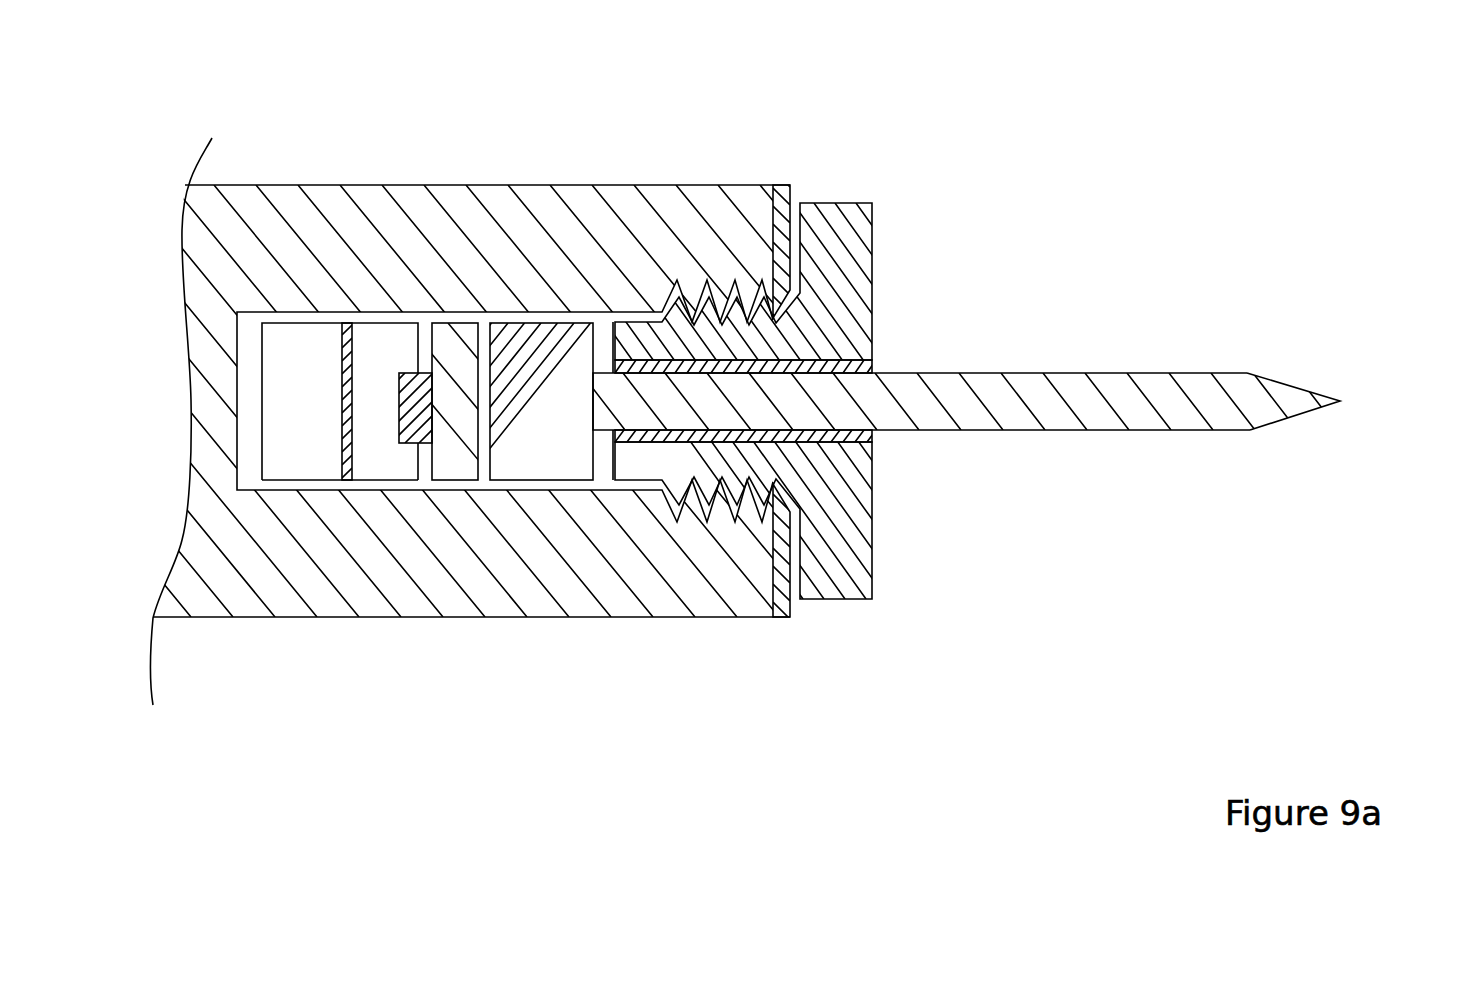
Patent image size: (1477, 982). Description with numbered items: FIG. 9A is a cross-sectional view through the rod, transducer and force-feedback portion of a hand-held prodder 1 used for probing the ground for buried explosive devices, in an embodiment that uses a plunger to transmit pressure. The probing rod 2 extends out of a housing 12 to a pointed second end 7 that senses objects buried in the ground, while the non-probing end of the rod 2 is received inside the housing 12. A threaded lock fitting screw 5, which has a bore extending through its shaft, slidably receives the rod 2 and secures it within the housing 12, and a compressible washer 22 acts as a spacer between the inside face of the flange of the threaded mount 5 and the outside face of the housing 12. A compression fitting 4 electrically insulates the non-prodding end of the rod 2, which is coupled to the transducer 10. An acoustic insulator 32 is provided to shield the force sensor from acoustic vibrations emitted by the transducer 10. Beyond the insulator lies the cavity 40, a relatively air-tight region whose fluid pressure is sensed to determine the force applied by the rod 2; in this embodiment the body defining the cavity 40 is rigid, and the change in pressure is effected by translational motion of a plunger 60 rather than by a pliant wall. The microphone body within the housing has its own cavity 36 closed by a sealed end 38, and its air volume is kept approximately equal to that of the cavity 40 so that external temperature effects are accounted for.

The prodder 1 is at (958, 262).
The rod 2 is at (1002, 373).
The compression fitting 4 is at (872, 438).
The threaded lock fitting screw 5 is at (872, 557).
The pointed second end 7 is at (1298, 387).
The transducer 10 is at (580, 323).
The housing 12 is at (505, 185).
The compressible washer 22 is at (792, 618).
The acoustic insulator 32 is at (450, 480).
The cavity 36 is at (282, 323).
The sealed end 38 is at (252, 618).
The cavity 40 is at (385, 480).
The plunger 60 is at (418, 373).